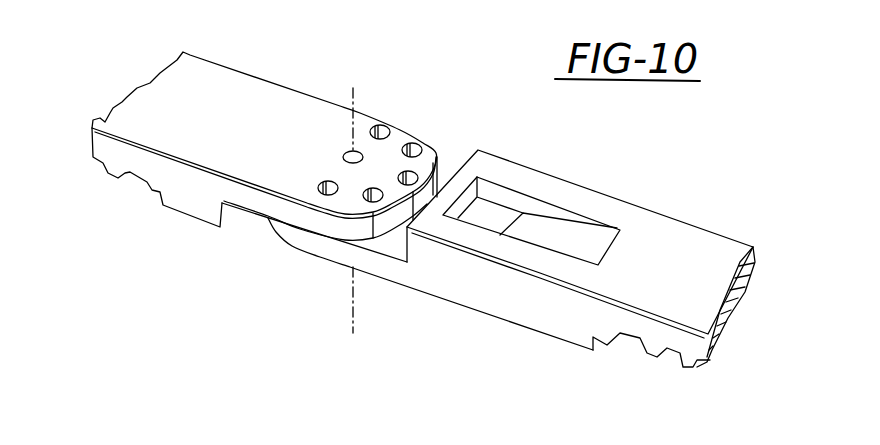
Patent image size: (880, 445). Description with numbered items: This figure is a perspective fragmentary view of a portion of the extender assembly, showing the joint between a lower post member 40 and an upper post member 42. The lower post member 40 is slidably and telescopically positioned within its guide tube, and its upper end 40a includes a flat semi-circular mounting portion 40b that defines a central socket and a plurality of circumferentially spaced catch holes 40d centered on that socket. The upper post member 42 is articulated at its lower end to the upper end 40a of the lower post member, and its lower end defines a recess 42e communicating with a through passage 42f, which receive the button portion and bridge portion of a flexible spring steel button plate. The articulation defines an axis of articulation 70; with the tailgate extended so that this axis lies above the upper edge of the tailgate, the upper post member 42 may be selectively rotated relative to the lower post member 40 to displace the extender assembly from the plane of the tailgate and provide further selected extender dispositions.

The lower post member 40 is at (117, 190).
The upper end of lower post member 40a is at (307, 128).
The flat semi-circular mounting portion 40b is at (250, 212).
The catch holes 40d is at (385, 126).
The upper post member 42 is at (727, 224).
The recess 42e is at (580, 215).
The through passage 42f is at (490, 220).
The axis of articulation 70 is at (353, 305).